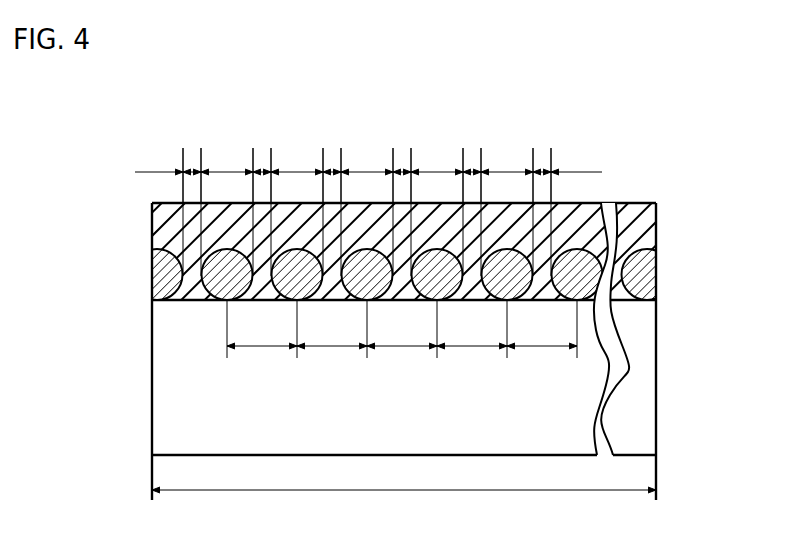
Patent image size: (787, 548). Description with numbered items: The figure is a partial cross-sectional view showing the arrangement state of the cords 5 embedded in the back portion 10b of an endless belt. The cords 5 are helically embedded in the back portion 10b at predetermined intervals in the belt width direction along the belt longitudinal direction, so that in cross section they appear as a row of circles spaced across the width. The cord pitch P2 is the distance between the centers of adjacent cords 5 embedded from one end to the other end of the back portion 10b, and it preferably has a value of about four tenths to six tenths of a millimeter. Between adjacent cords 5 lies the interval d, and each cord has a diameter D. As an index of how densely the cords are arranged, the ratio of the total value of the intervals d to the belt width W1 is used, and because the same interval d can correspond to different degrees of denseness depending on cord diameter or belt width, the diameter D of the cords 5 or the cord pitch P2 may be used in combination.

The back portion 10b is at (152, 230).
The cords 5 is at (173, 300).
The diameter of the cords D is at (368, 209).
The interval between the adjacent cords d is at (367, 166).
The cord pitch P2 is at (402, 329).
The belt width W1 is at (404, 479).